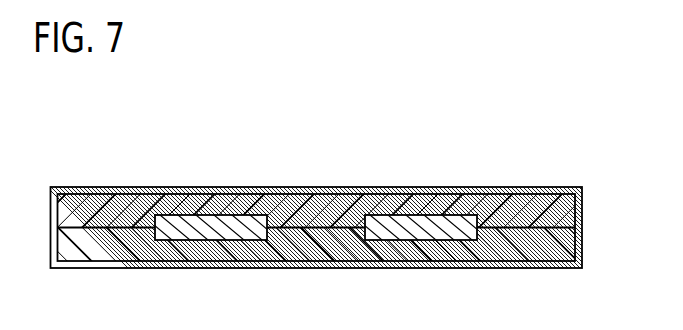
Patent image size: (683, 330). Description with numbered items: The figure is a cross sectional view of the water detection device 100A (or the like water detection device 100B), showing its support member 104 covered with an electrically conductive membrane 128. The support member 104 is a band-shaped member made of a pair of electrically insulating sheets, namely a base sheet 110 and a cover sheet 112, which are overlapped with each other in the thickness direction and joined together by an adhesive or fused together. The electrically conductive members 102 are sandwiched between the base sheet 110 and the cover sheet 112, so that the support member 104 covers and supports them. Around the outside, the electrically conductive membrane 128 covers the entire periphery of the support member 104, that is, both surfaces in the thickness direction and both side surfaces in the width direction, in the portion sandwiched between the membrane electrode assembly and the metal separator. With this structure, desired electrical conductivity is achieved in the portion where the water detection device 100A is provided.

The water detection device 100A is at (317, 185).
The water detection device 100B is at (172, 176).
The electrically conductive members 102 is at (243, 231).
The support member 104 is at (360, 210).
The base sheet 110 is at (343, 247).
The cover sheet 112 is at (310, 207).
The electrically conductive membrane 128 is at (450, 192).